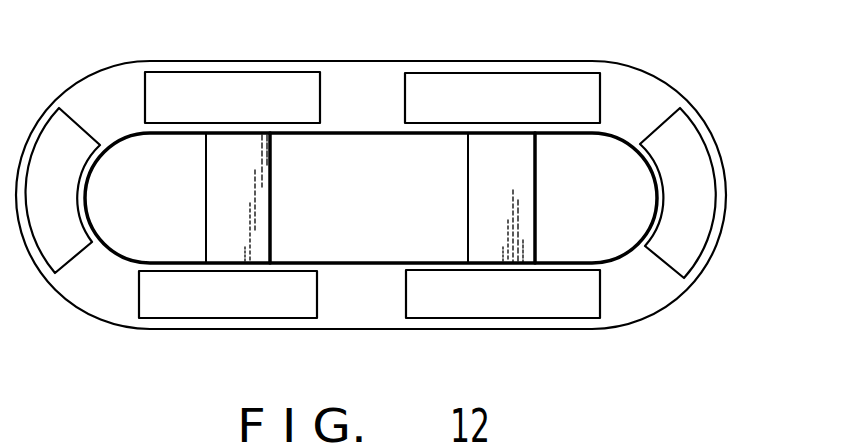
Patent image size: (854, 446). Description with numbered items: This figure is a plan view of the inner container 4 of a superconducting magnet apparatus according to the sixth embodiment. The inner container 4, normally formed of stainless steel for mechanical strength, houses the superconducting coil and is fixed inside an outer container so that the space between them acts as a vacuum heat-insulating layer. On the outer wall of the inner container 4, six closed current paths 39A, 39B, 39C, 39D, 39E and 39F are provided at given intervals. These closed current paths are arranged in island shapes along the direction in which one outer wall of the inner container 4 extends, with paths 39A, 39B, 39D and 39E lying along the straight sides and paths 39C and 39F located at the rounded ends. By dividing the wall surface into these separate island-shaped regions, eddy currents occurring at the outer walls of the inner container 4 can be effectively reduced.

The inner container 4 is at (581, 30).
The closed current path 39A is at (602, 307).
The closed current path 39B is at (317, 302).
The closed current path 39C is at (70, 260).
The closed current path 39D is at (322, 98).
The closed current path 39E is at (603, 97).
The closed current path 39F is at (705, 223).